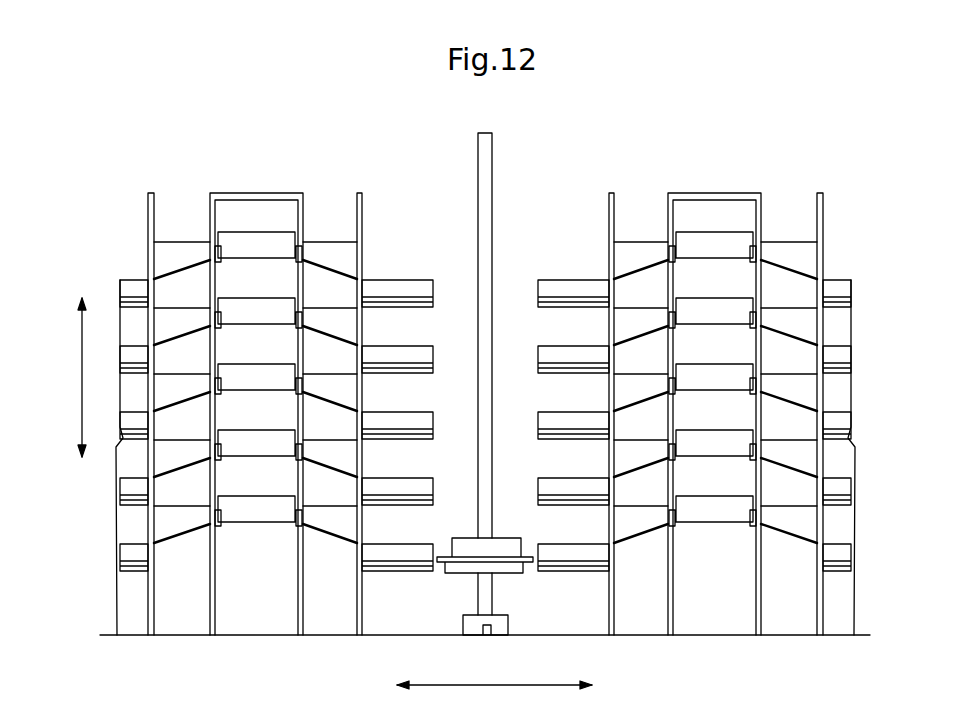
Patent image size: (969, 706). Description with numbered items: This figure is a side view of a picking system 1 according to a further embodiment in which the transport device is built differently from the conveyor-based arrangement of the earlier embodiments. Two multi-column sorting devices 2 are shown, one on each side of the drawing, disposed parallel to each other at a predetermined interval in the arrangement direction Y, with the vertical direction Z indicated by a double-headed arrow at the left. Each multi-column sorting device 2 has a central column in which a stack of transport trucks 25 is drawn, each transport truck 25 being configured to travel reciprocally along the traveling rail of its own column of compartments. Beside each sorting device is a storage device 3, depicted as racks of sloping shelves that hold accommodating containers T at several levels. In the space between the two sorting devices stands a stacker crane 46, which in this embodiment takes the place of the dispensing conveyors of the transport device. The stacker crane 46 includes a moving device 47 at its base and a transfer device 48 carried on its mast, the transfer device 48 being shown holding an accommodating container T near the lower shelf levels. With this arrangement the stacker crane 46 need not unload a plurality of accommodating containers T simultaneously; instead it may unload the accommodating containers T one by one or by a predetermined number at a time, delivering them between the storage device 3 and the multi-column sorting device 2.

The picking system 1 is at (140, 165).
The multi-column sorting device 2 is at (258, 177).
The storage device 3 is at (178, 223).
The transport truck 25 is at (233, 308).
The stacker crane 46 is at (512, 187).
The moving device 47 is at (458, 575).
The transfer device 48 is at (443, 556).
The accommodating container T is at (433, 348).
The vertical direction Z is at (90, 377).
The arrangement direction Y is at (494, 671).